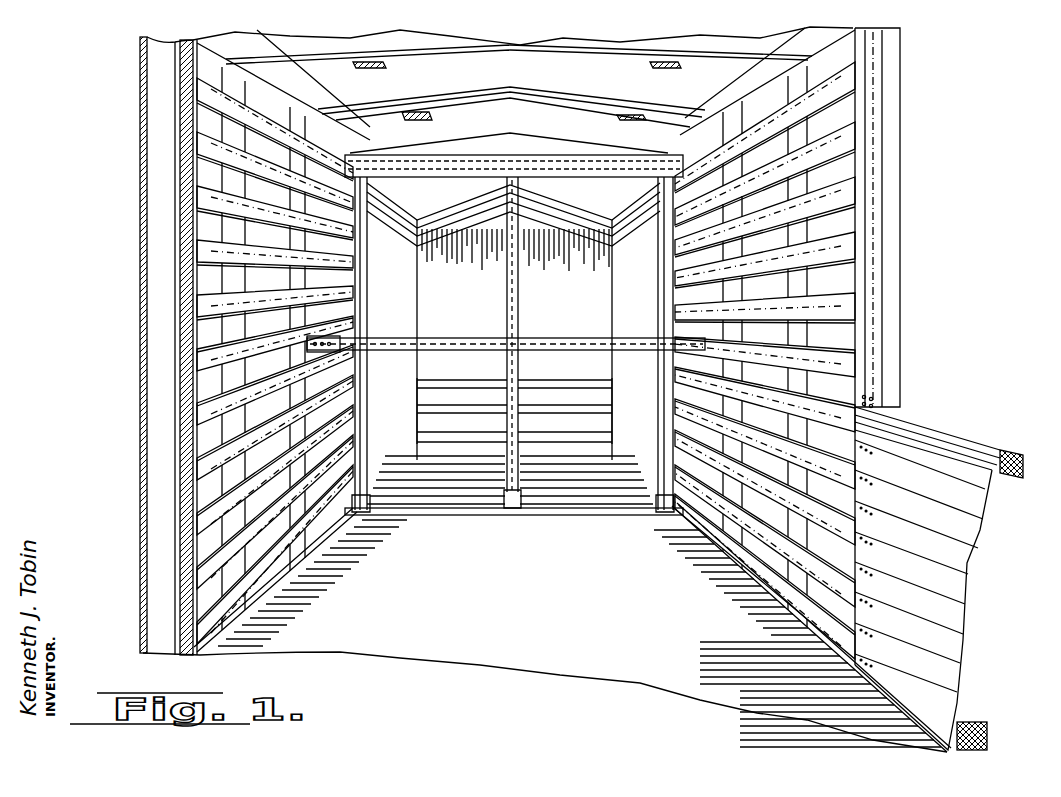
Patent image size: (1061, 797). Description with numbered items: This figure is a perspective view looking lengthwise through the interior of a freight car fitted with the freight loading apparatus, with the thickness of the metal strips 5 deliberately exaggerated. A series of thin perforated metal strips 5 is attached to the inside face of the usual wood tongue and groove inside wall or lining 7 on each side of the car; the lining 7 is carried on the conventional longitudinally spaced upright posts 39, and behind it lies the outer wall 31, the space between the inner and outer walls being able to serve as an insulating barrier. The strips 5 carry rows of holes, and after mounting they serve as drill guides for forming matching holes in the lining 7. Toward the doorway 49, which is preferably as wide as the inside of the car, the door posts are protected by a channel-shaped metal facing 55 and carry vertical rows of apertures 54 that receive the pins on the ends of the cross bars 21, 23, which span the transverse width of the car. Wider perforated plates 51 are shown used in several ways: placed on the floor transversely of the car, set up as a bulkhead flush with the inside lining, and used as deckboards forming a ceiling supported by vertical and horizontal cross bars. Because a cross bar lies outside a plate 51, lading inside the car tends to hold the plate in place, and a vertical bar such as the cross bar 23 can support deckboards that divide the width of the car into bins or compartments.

The metal strips 5 is at (197, 417).
The inside wall or lining 7 is at (200, 445).
The cross bar 21 is at (990, 436).
The cross bar 23 is at (453, 177).
The outer wall 31 is at (140, 258).
The upright posts 39 is at (160, 318).
The doorway 49 is at (887, 329).
The plates 51 is at (372, 156).
The apertures 54 is at (875, 406).
The channel-shaped metal facing 55 is at (900, 275).